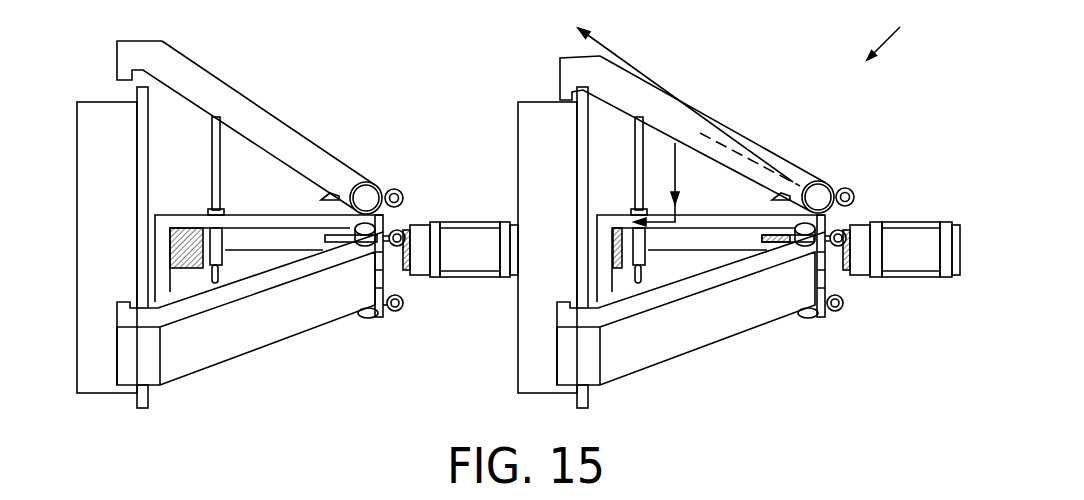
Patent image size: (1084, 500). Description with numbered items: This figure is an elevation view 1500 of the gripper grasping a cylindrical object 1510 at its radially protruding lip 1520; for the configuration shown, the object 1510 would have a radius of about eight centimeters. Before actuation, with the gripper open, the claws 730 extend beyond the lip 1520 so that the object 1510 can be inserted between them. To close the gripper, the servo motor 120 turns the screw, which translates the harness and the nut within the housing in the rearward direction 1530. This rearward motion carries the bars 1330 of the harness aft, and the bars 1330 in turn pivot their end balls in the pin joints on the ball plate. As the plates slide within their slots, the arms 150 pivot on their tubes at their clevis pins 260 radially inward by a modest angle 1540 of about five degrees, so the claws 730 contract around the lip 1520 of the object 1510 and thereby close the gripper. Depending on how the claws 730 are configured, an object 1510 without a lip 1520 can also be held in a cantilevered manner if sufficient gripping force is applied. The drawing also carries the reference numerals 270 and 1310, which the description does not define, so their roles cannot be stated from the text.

The servo motor 120 is at (900, 220).
The arm 150 is at (310, 330).
The clevis pin 260 is at (385, 218).
The eyelet ring 270 is at (394, 189).
The claw 730 is at (117, 62).
The support foot 1310 is at (210, 212).
The bar 1330 is at (221, 163).
The elevation view 1500 is at (908, 30).
The cylindrical object 1510 is at (517, 125).
The radially protruding lip 1520 is at (148, 400).
The rearward direction 1530 is at (679, 181).
The modest angle 1540 is at (737, 143).